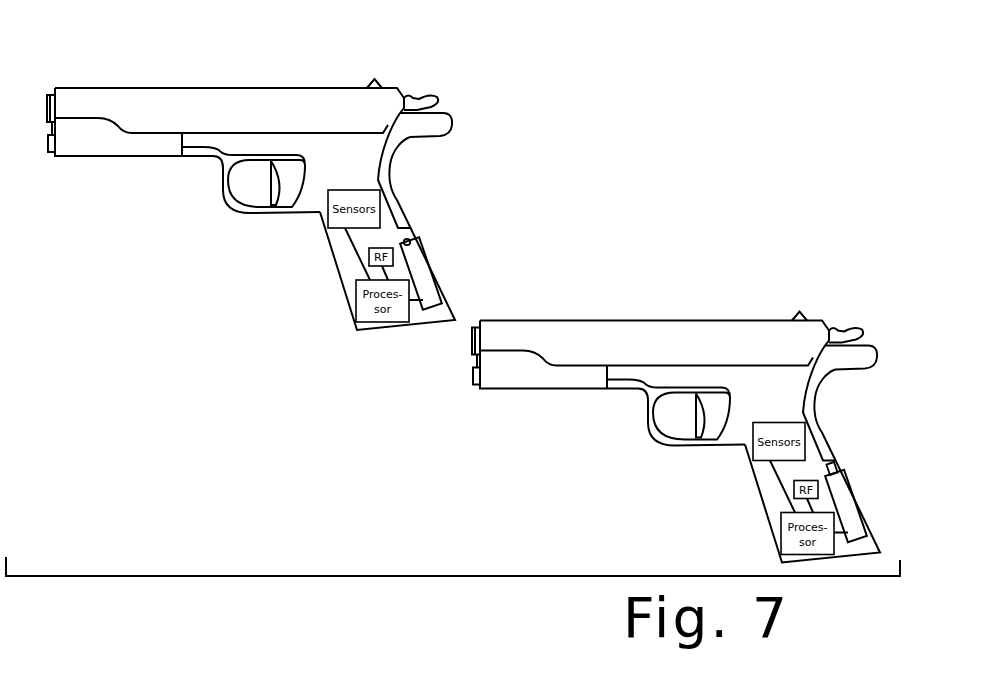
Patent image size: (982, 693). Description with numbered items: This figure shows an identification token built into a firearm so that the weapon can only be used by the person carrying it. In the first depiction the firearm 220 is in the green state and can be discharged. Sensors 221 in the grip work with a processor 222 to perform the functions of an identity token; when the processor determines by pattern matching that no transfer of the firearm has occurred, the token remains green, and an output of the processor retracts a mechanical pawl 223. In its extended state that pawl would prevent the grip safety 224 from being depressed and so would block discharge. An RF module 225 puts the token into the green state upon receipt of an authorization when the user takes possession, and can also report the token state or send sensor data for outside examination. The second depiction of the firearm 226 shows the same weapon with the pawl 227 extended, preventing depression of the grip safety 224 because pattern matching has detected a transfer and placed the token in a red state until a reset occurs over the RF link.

The firearm 220 is at (253, 88).
The sensors 221 is at (328, 213).
The processor 222 is at (356, 303).
The mechanical pawl 223 is at (413, 233).
The grip safety 224 is at (400, 188).
The RF module 225 is at (369, 258).
The firearm (second depiction) 226 is at (678, 320).
The pawl (extended) 227 is at (835, 472).